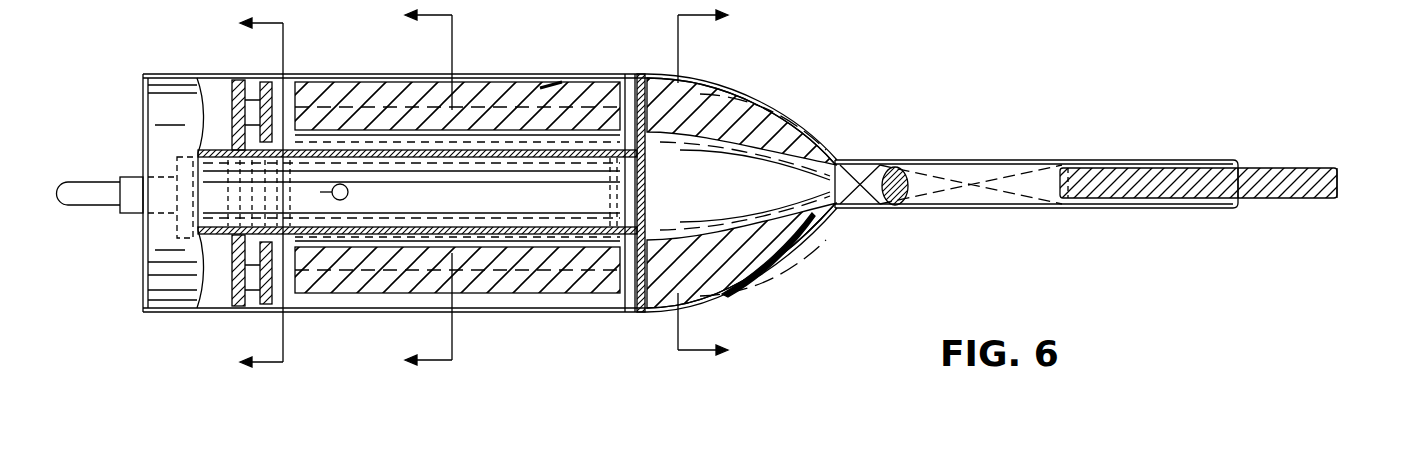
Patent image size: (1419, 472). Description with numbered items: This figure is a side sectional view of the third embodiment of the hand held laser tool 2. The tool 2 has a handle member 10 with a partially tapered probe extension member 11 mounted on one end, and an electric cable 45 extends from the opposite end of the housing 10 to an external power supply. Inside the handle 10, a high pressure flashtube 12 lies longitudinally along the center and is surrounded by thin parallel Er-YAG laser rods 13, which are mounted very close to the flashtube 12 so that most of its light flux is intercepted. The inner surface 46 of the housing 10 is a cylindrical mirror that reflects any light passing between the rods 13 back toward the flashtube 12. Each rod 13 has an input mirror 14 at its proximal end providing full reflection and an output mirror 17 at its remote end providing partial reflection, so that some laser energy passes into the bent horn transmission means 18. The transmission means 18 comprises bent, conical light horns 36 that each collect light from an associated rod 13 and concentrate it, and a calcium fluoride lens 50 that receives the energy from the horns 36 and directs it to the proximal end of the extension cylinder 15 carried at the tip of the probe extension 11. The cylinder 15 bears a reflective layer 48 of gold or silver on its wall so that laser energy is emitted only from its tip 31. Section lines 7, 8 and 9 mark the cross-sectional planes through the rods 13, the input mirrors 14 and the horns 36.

The hand held laser tool 2 is at (842, 52).
The section line 7- 7 is at (410, 187).
The section line 8- 8 is at (243, 193).
The section line 9- 9 is at (722, 182).
The handle member 10 is at (150, 88).
The probe extension member 11 is at (986, 161).
The flashtube 12 is at (530, 200).
The laser rods 13 is at (518, 272).
The input mirror 14 is at (244, 79).
The extension cylinder 15 is at (1257, 185).
The output mirror 17 is at (629, 73).
The light horn transmission means 18 is at (796, 330).
The tip 31 is at (1353, 164).
The bent light horns 36 is at (781, 263).
The electric cable 45 is at (90, 211).
The inner surface 46 is at (570, 74).
The reflective layer 48 is at (1275, 152).
The lens 50 is at (893, 170).